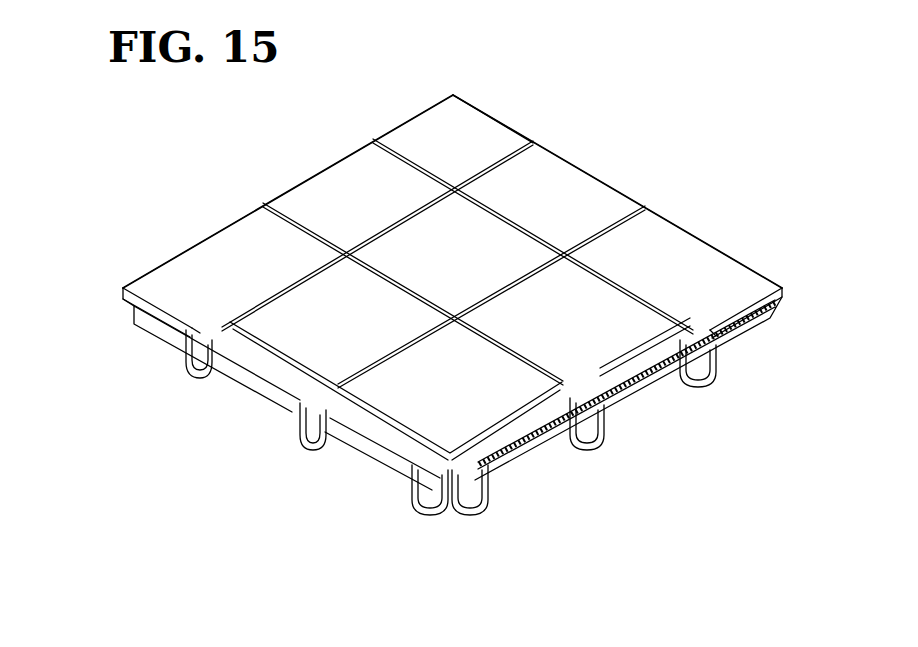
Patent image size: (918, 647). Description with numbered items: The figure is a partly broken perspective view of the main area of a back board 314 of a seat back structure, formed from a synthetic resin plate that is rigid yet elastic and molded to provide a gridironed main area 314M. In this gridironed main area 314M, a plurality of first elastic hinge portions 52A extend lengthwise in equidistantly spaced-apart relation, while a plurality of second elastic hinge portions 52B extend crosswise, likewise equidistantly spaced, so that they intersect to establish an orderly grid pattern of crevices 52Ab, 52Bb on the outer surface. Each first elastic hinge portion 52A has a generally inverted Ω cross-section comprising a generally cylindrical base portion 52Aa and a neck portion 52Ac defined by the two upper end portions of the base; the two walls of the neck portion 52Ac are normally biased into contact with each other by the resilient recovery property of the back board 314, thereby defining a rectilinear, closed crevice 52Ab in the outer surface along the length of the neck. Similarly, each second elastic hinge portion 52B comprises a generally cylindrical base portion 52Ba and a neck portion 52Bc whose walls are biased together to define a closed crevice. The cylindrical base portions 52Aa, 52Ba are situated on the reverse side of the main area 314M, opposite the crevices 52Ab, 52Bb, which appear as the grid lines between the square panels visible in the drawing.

The back board 314 is at (718, 115).
The gridironed main area 314M is at (572, 140).
The first elastic hinge portion 52A is at (193, 380).
The generally cylindrical base portion 52Aa is at (182, 392).
The crevice 52Ab is at (498, 147).
The neck portion 52Ac is at (177, 367).
The second elastic hinge portion 52B is at (266, 393).
The generally cylindrical base portion 52Ba is at (150, 320).
The crevice 52Bb is at (412, 162).
The neck portion 52Bc is at (465, 522).